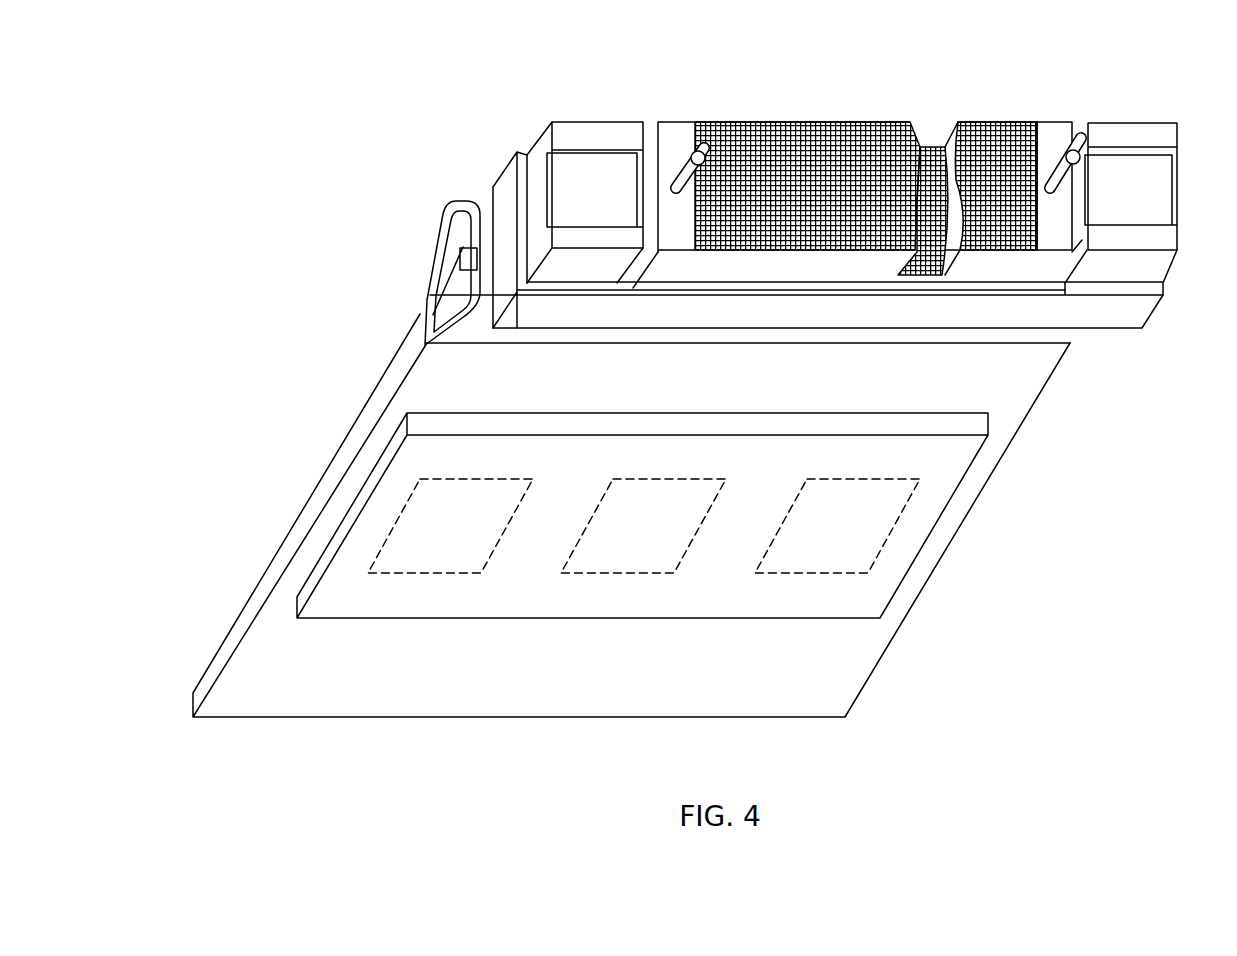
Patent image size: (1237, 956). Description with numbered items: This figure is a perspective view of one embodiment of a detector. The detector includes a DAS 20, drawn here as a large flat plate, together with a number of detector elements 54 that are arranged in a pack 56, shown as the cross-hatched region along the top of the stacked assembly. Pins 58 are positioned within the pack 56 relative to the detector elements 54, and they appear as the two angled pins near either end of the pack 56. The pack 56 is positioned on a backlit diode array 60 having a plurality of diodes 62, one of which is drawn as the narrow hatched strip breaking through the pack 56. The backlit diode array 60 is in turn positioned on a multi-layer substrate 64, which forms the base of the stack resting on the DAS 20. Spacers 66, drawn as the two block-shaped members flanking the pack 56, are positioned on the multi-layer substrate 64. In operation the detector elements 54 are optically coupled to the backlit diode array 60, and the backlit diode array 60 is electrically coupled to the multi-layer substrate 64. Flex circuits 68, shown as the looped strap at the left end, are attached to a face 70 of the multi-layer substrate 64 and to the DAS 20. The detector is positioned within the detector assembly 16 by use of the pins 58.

The detector assembly 16 is at (1081, 100).
The DAS 20 is at (970, 488).
The detector elements 54 is at (778, 133).
The pack 56 is at (848, 176).
The pins 58 is at (683, 165).
The backlit diode array 60 is at (1040, 280).
The diodes 62 is at (930, 147).
The multi-layer substrate 64 is at (1142, 313).
The spacers 66 is at (588, 128).
The flex circuits 68 is at (452, 313).
The face 70 is at (492, 193).